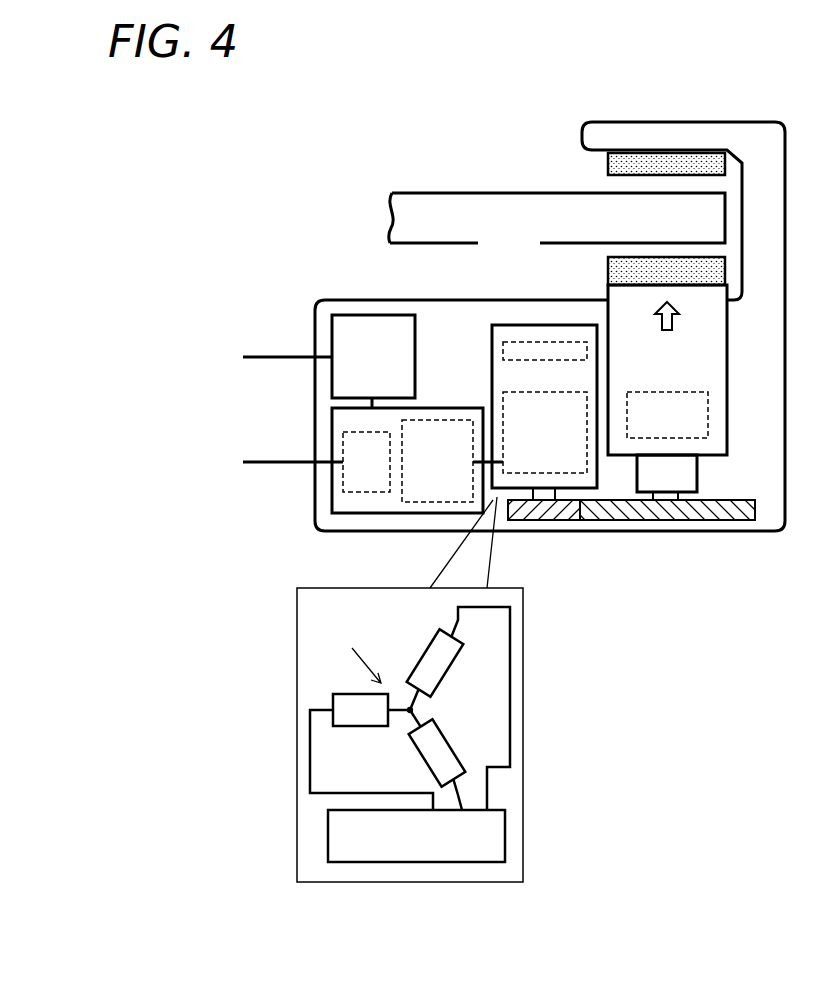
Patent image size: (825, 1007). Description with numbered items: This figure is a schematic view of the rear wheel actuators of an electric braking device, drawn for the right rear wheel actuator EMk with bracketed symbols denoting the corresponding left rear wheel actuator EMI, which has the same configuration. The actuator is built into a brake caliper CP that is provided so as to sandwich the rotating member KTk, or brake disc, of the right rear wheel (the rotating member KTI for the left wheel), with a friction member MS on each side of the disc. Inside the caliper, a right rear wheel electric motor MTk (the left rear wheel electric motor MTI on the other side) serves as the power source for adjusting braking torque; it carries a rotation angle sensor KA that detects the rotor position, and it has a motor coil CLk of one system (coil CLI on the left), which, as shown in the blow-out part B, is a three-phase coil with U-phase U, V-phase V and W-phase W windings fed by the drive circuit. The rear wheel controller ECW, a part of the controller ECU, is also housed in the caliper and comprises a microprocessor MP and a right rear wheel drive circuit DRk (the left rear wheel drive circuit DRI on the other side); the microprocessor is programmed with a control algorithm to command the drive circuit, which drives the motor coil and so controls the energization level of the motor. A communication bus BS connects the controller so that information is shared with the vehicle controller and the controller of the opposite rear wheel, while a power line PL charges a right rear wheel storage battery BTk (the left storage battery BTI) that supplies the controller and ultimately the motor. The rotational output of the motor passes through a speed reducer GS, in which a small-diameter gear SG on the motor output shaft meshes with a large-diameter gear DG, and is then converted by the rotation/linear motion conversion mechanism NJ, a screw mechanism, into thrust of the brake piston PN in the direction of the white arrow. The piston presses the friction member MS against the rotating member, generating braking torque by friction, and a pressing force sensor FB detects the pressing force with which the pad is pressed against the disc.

The right rear wheel actuator EMk is at (203, 396).
The left rear wheel actuator EMI is at (460, 364).
The brake caliper CP is at (355, 300).
The rotating member KTk is at (557, 173).
The rotating member KTI is at (430, 193).
The friction member MS is at (608, 160).
The brake piston PN is at (727, 337).
The rotation/linear motion conversion mechanism NJ is at (667, 415).
The pressing force sensor FB is at (667, 477).
The right rear wheel electric motor MTk is at (519, 358).
The left rear wheel electric motor MTI is at (512, 325).
The rotation angle sensor KA is at (501, 355).
The right rear wheel motor coil CLk is at (545, 432).
The left rear wheel motor coil CLI is at (545, 432).
The right rear wheel storage battery BTk is at (373, 361).
The left rear wheel storage battery BTI is at (373, 361).
The power line PL is at (287, 342).
The communication bus BS is at (293, 446).
The rear wheel controller ECW is at (424, 408).
The controller ECU is at (332, 497).
The microprocessor MP is at (366, 462).
The right rear wheel drive circuit DRk is at (452, 461).
The left rear wheel drive circuit DRI is at (452, 461).
The speed reducer GS is at (633, 576).
The small-diameter gear SG is at (555, 520).
The large-diameter gear DG is at (608, 520).
The blow-out part B is at (338, 588).
The U-phase U is at (360, 710).
The V-phase V is at (437, 752).
The W-phase W is at (435, 662).